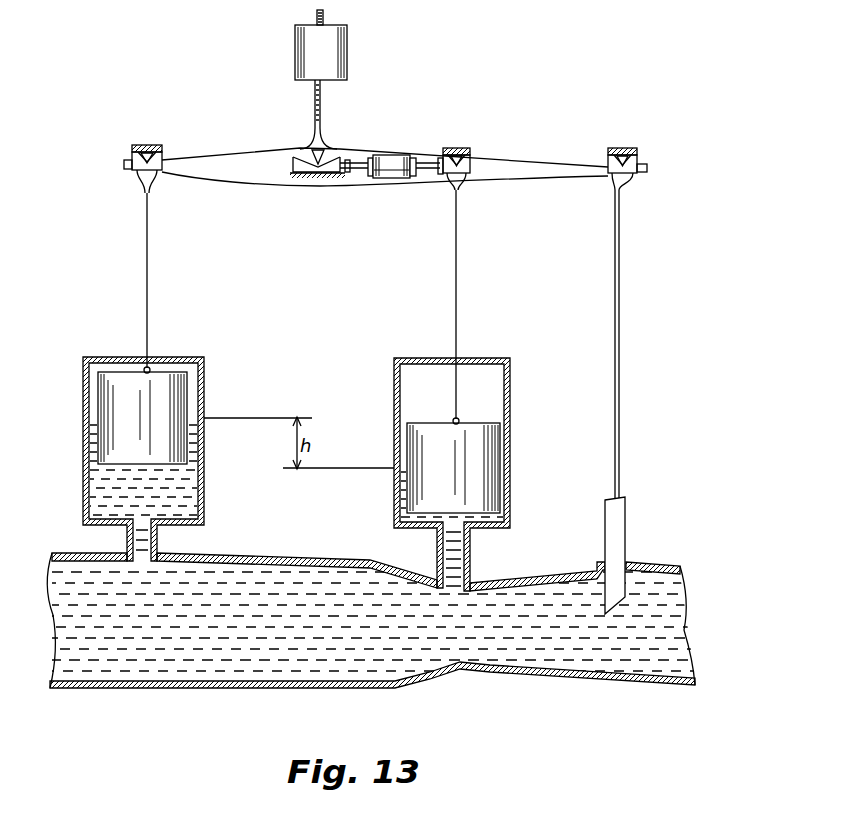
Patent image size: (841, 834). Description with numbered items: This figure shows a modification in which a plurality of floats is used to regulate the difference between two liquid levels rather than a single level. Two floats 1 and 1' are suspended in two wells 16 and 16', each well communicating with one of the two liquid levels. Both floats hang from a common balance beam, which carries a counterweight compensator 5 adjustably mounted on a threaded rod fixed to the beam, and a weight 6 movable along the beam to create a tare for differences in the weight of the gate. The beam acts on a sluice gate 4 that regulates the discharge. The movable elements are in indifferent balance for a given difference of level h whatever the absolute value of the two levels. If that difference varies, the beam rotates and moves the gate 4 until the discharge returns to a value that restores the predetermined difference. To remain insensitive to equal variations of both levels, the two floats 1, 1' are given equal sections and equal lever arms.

The float 1 is at (161, 328).
The second float 1' is at (453, 351).
The well 16 is at (164, 459).
The second well 16' is at (474, 474).
The sluice gate 4 is at (627, 529).
The counterweight compensator 5 is at (348, 58).
The weight 6 is at (388, 158).